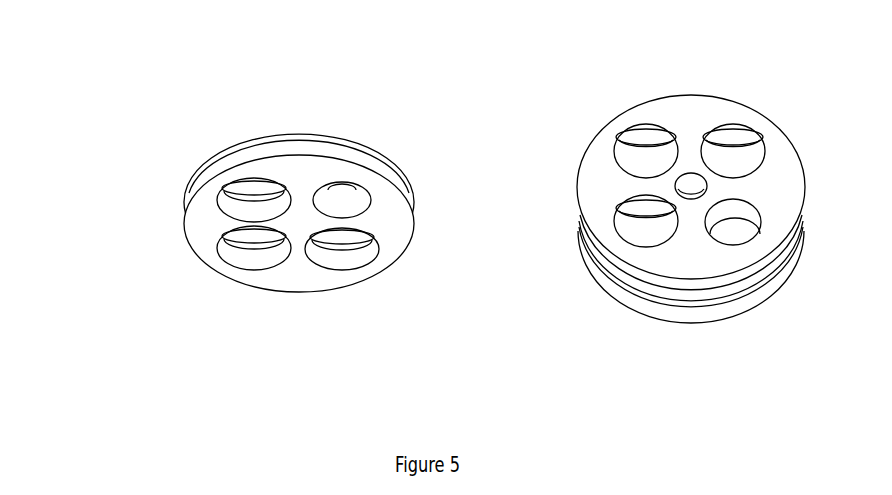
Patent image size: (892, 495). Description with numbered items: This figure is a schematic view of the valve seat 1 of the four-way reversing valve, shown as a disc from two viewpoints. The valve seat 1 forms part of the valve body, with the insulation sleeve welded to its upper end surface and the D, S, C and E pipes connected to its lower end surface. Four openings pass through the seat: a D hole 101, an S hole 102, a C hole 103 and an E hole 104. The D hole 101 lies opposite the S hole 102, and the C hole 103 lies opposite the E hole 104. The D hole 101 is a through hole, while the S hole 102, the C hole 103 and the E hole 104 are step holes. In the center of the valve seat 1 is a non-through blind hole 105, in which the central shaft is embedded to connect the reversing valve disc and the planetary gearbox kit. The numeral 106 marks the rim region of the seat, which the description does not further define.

The valve seat 1 is at (390, 163).
The D hole 101 is at (735, 236).
The S hole 102 is at (263, 247).
The C hole 103 is at (250, 204).
The E hole 104 is at (358, 243).
The blind hole 105 is at (688, 178).
The rim edge 106 is at (697, 287).